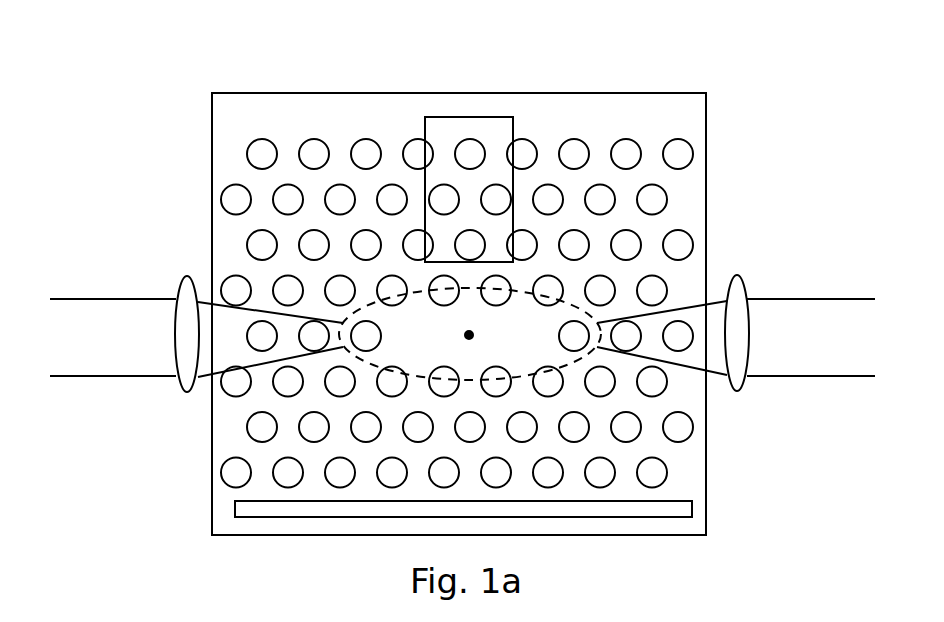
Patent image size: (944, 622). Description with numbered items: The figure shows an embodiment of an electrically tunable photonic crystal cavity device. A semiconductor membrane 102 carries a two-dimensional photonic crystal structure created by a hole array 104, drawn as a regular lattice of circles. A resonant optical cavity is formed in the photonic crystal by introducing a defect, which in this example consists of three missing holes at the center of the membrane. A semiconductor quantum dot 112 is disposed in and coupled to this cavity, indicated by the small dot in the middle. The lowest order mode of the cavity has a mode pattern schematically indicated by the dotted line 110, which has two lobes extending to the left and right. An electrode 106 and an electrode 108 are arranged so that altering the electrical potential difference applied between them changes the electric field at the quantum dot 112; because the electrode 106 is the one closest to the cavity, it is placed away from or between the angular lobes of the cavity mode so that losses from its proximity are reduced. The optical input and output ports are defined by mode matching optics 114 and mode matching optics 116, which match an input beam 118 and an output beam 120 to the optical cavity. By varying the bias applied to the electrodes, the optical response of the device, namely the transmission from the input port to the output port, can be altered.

The semiconductor membrane 102 is at (227, 108).
The hole array 104 is at (645, 127).
The electrode 106 is at (465, 127).
The electrode 108 is at (655, 511).
The dotted line 110 is at (360, 307).
The semiconductor quantum dot 112 is at (469, 335).
The mode matching optics 114 is at (188, 385).
The mode matching optics 116 is at (736, 385).
The input beam 118 is at (133, 298).
The output beam 120 is at (860, 299).